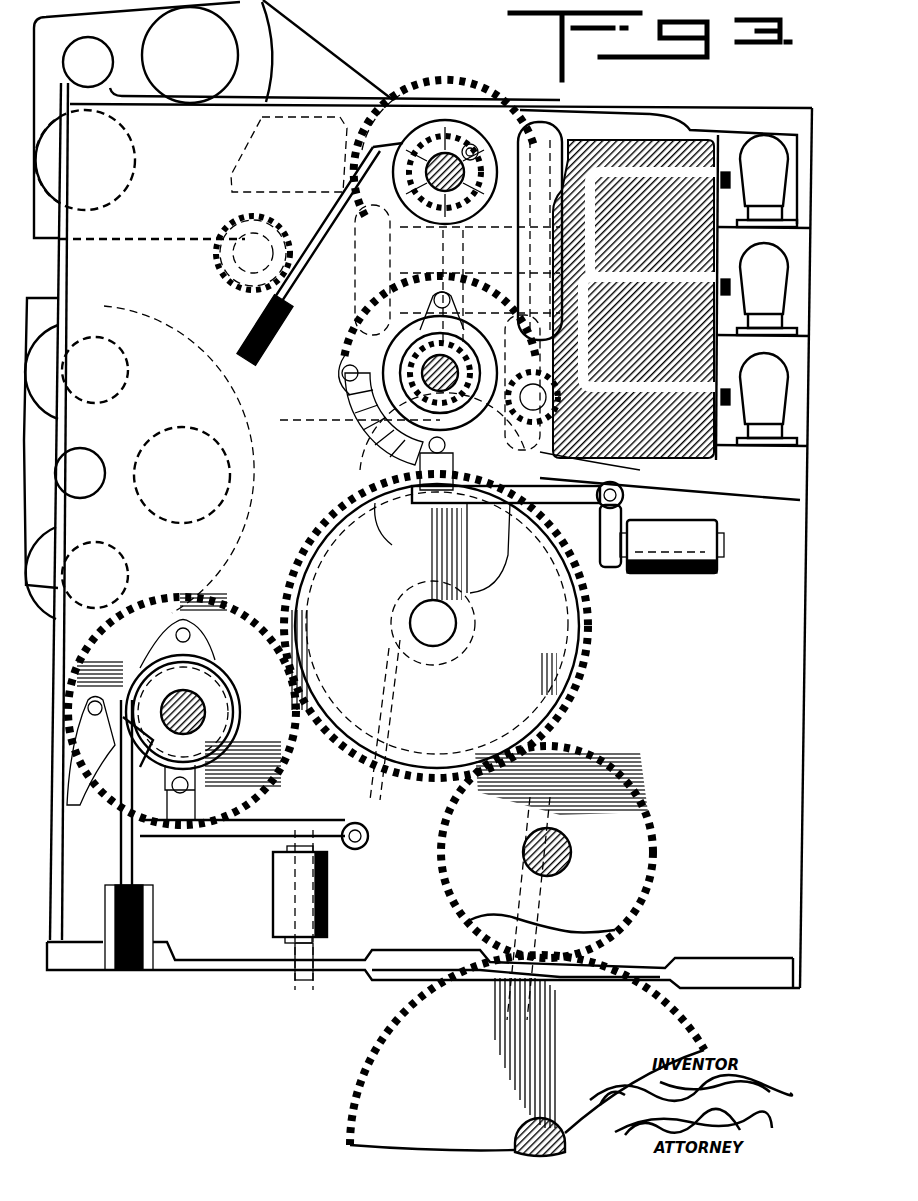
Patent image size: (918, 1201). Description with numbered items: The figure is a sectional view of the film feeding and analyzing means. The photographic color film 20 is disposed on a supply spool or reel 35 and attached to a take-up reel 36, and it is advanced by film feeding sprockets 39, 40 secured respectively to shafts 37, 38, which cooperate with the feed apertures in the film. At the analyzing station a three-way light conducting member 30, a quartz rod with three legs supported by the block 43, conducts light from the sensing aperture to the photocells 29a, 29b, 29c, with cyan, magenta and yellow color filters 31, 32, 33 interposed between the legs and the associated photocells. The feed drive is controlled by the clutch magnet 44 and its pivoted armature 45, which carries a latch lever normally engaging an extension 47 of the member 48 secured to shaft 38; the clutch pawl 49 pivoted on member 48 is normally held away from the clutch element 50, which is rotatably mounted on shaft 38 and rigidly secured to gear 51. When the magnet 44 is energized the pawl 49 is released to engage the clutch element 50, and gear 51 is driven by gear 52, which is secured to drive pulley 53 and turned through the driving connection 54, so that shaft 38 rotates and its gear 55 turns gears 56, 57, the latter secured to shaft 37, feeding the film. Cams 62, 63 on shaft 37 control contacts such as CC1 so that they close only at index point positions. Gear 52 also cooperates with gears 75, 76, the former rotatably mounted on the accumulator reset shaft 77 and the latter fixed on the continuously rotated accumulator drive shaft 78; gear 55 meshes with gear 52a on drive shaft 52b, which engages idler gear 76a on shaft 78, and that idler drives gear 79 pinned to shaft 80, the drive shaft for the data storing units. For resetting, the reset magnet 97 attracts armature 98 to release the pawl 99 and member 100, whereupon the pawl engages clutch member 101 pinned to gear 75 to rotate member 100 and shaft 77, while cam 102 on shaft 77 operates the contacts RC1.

The photographic color film 20 is at (285, 30).
The supply spool or reel 35 is at (270, 70).
The take-up reel 36 is at (103, 300).
The shaft 37 is at (442, 150).
The film feeding sprocket 39 is at (470, 75).
The gear 57 is at (400, 85).
The cam 62 is at (412, 152).
The cam 63 is at (410, 205).
The contacts CC1 is at (360, 164).
The gear 56 is at (215, 250).
The gear 55 is at (340, 374).
The block 43 is at (640, 150).
The film feeding sprocket 40 is at (355, 482).
The clutch element 50 is at (380, 430).
The member 48 is at (420, 470).
The gear 51 is at (490, 452).
The extension 47 is at (490, 505).
The clutch pawl 49 is at (397, 666).
The pivoted armature 45 is at (620, 510).
The shaft 38 is at (595, 463).
The clutch magnet 44 is at (665, 573).
The three-way light conducting member 30 is at (636, 299).
The color filter 31 is at (717, 283).
The color filter 32 is at (729, 300).
The color filter 33 is at (727, 407).
The photocell 29a is at (764, 177).
The photocell 29b is at (764, 285).
The photocell 29c is at (764, 395).
The gear 52 is at (308, 530).
The drive pulley 53 is at (585, 640).
The driving connection 54 is at (555, 735).
The gear 52a is at (590, 600).
The drive shaft 52b is at (445, 640).
The gear 75 is at (215, 613).
The shaft 77 is at (240, 720).
The cam 102 is at (220, 672).
The clutch member 101 is at (232, 692).
The member 100 is at (196, 640).
The pawl 99 is at (110, 756).
The contacts RC1 is at (117, 842).
The armature 98 is at (236, 840).
The reset magnet 97 is at (285, 898).
The gear 76 is at (640, 905).
The shaft 78 is at (572, 848).
The idler gear 76a is at (600, 944).
The gear 79 is at (420, 1002).
The shaft 80 is at (512, 1142).